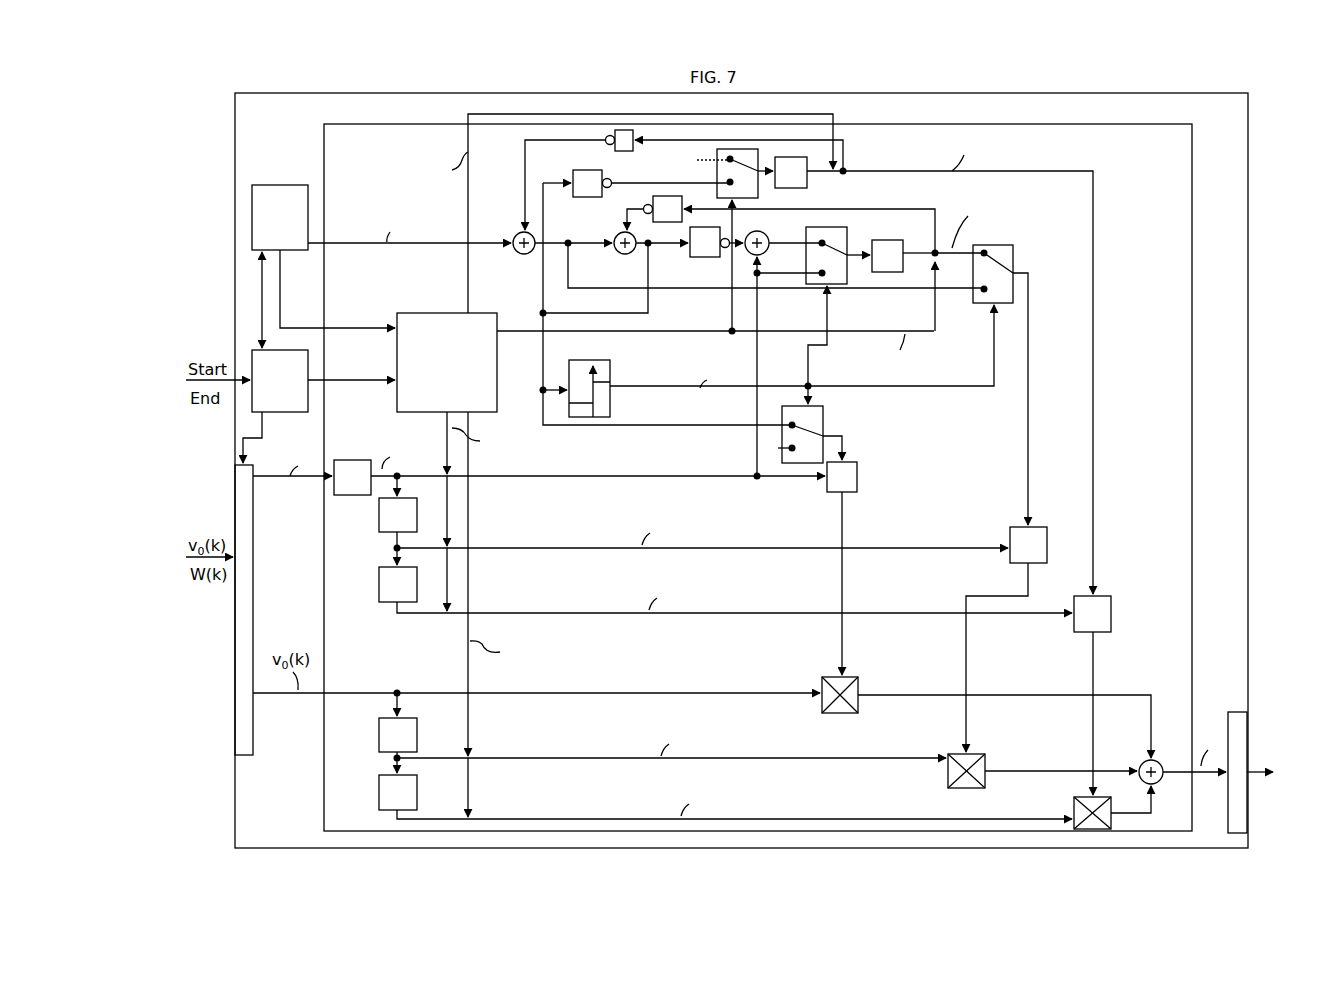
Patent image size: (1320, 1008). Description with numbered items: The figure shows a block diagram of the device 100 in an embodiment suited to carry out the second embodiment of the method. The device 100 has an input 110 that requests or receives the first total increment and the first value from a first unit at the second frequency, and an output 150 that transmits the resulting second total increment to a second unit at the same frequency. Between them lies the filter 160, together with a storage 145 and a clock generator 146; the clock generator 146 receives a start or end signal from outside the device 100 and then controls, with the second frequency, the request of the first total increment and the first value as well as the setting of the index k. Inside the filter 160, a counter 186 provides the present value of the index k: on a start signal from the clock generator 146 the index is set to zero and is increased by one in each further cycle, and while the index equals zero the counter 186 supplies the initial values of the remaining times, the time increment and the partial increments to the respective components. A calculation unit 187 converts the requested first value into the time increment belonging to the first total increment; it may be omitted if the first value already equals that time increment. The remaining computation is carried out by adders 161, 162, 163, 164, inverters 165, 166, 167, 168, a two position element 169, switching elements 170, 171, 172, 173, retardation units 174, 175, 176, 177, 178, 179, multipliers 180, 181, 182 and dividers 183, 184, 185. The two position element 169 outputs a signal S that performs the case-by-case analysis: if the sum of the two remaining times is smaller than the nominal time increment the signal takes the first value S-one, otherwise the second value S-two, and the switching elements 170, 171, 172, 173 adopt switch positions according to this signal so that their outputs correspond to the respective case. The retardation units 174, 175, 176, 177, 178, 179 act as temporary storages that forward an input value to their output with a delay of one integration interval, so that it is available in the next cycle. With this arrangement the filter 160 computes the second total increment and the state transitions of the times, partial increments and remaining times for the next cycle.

The device 100 is at (1248, 172).
The input 110 is at (243, 757).
The storage 145 is at (285, 184).
The clock generator 146 is at (290, 328).
The output 150 is at (1237, 836).
The filter 160 is at (1193, 198).
The adder 161 is at (518, 255).
The adder 162 is at (620, 256).
The adder 163 is at (765, 241).
The adder 164 is at (1162, 786).
The inverter 165 is at (632, 152).
The inverter 166 is at (572, 176).
The inverter 167 is at (691, 256).
The inverter 168 is at (679, 197).
The two position element 169 is at (612, 370).
The switching element 170 is at (758, 152).
The switching element 171 is at (847, 230).
The switching element 172 is at (828, 428).
The switching element 173 is at (994, 245).
The retardation unit 174 is at (808, 184).
The retardation unit 175 is at (888, 240).
The retardation unit 176 is at (377, 512).
The retardation unit 177 is at (377, 580).
The retardation unit 178 is at (376, 743).
The retardation unit 179 is at (376, 801).
The multiplier 180 is at (858, 684).
The multiplier 181 is at (985, 762).
The multiplier 182 is at (1072, 802).
The divider 183 is at (857, 483).
The divider 184 is at (1047, 535).
The divider 185 is at (1111, 612).
The counter 186 is at (411, 311).
The calculation unit 187 is at (336, 481).